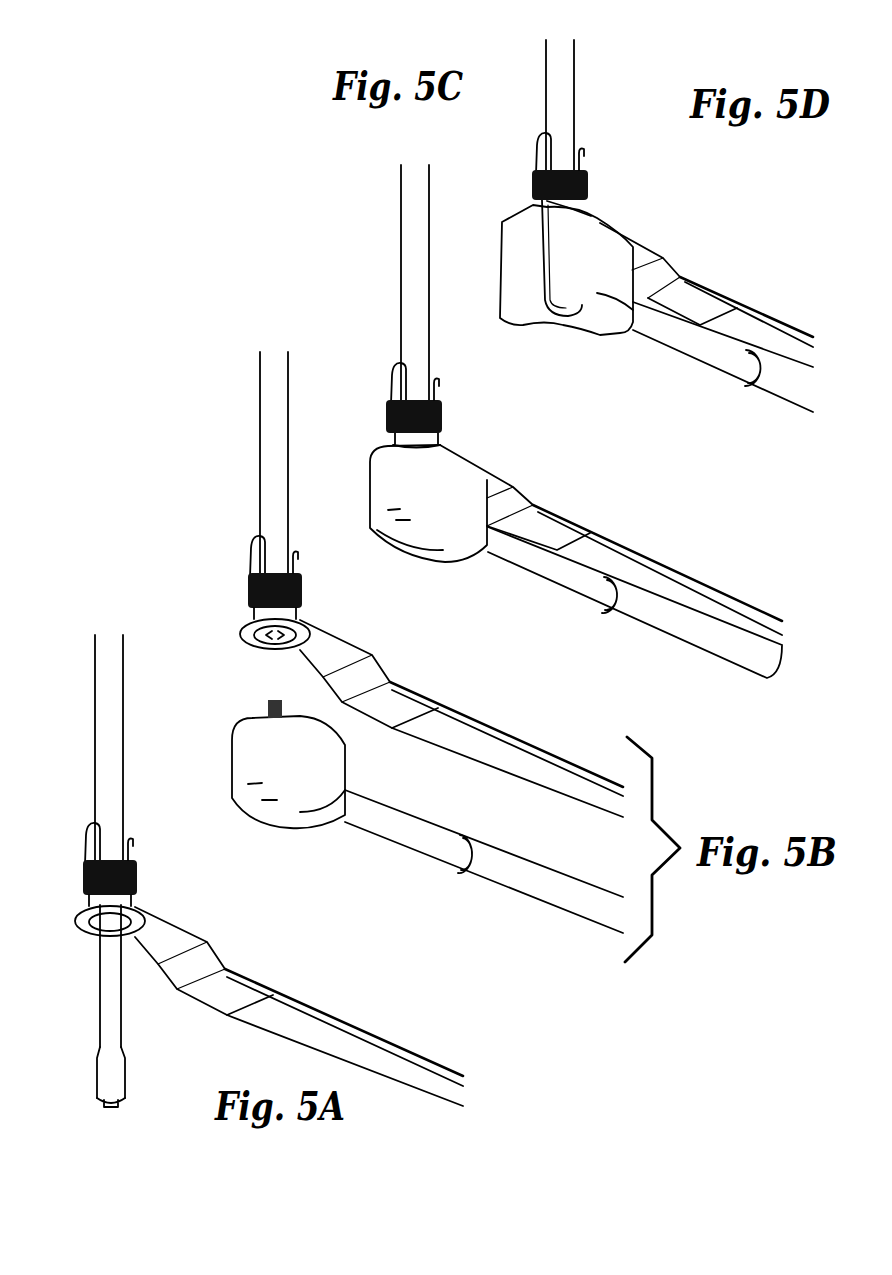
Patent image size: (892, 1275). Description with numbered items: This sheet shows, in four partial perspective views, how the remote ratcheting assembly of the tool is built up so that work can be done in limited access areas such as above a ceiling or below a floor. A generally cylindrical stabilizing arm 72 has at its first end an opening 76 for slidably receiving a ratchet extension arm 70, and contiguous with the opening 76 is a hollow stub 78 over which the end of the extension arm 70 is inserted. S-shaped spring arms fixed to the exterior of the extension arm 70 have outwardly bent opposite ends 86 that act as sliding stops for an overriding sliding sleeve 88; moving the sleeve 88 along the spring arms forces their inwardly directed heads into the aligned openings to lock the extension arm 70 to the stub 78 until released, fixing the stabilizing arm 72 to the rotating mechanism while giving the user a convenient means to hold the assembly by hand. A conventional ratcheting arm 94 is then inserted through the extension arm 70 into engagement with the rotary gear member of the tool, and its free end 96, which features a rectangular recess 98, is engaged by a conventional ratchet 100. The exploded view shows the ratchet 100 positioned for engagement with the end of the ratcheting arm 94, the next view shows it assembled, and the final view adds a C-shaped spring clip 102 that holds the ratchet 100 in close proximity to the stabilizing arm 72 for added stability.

In FIG. 5A, the ratchet extension arm 70 is at (122, 713).
In FIG. 5A, the stabilizing arm 72 is at (328, 1010).
In FIG. 5B, the stabilizing arm 72 is at (465, 710).
In FIG. 5C, the stabilizing arm 72 is at (602, 530).
In FIG. 5D, the stabilizing arm 72 is at (697, 282).
In FIG. 5A, the opening 76 is at (150, 945).
In FIG. 5A, the hollow stub 78 is at (138, 905).
In FIG. 5A, the outwardly bent opposite ends 86 is at (83, 828).
In FIG. 5B, the outwardly bent opposite ends 86 is at (252, 538).
In FIG. 5A, the overriding sliding sleeve 88 is at (137, 873).
In FIG. 5B, the overriding sliding sleeve 88 is at (300, 587).
In FIG. 5C, the overriding sliding sleeve 88 is at (442, 412).
In FIG. 5D, the overriding sliding sleeve 88 is at (587, 187).
In FIG. 5A, the ratcheting arm 94 is at (123, 1013).
In FIG. 5A, the free end 96 is at (98, 1062).
In FIG. 5A, the rectangular recess 98 is at (117, 1110).
In FIG. 5B, the ratchet 100 is at (397, 836).
In FIG. 5D, the C-shaped spring clip 102 is at (498, 243).